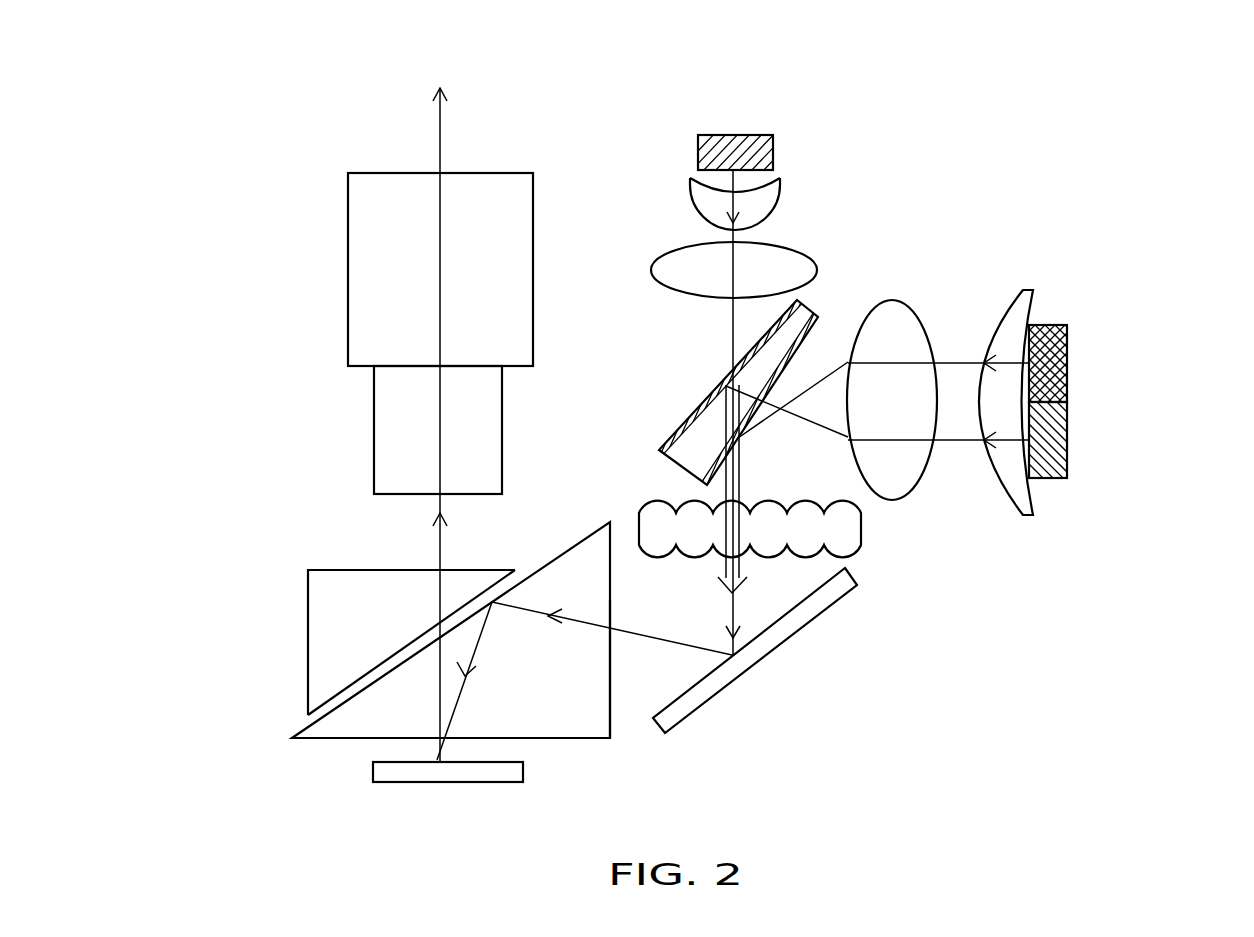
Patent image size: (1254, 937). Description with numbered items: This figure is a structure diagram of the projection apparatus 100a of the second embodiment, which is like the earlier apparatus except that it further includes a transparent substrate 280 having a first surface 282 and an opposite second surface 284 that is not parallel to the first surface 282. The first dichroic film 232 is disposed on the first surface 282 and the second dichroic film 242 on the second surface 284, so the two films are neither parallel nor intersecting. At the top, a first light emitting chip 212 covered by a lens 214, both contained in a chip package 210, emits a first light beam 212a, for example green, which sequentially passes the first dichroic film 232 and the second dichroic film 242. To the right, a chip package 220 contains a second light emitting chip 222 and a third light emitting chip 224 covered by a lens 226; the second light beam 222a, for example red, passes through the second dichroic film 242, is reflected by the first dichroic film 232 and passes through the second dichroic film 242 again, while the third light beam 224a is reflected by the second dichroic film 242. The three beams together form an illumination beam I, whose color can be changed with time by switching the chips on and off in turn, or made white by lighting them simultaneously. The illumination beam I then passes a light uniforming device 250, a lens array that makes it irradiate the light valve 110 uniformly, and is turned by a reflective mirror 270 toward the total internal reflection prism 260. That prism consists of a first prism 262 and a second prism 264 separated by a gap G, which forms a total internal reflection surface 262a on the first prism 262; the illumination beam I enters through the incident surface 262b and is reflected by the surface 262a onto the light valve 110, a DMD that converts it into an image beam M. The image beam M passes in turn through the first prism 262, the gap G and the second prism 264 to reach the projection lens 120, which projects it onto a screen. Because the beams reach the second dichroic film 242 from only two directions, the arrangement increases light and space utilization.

The projection apparatus 100a is at (1242, 834).
The light valve 110 is at (489, 775).
The projection lens 120 is at (362, 278).
The chip package 210 is at (757, 123).
The first light emitting chip 212 is at (750, 147).
The first light beam 212a is at (730, 236).
The lens 214 is at (773, 200).
The chip package 220 is at (1107, 407).
The second light emitting chip 222 is at (1052, 440).
The second light beam 222a is at (946, 445).
The third light emitting chip 224 is at (1052, 368).
The third light beam 224a is at (947, 362).
The lens 226 is at (1180, 360).
The first dichroic film 232 is at (683, 442).
The second dichroic film 242 is at (707, 465).
The light uniforming device 250 is at (852, 529).
The total internal reflection prism 260 is at (412, 687).
The first prism 262 is at (446, 681).
The total internal reflection surface 262a is at (380, 675).
The incident surface 262b is at (612, 714).
The second prism 264 is at (322, 634).
The reflective mirror 270 is at (694, 701).
The transparent substrate 280 is at (755, 354).
The first surface 282 is at (710, 401).
The second surface 284 is at (810, 333).
The image beam M is at (437, 548).
The gap G is at (525, 572).
The illumination beam I is at (733, 608).